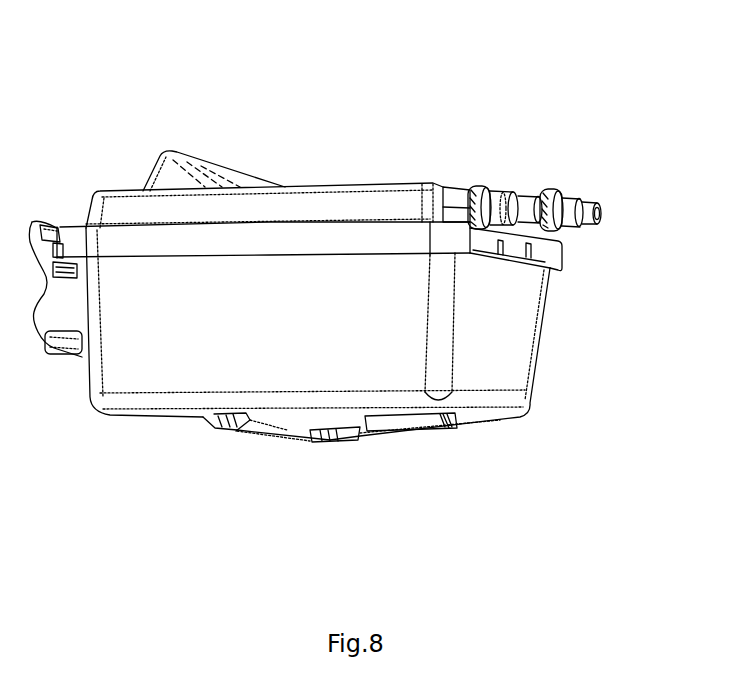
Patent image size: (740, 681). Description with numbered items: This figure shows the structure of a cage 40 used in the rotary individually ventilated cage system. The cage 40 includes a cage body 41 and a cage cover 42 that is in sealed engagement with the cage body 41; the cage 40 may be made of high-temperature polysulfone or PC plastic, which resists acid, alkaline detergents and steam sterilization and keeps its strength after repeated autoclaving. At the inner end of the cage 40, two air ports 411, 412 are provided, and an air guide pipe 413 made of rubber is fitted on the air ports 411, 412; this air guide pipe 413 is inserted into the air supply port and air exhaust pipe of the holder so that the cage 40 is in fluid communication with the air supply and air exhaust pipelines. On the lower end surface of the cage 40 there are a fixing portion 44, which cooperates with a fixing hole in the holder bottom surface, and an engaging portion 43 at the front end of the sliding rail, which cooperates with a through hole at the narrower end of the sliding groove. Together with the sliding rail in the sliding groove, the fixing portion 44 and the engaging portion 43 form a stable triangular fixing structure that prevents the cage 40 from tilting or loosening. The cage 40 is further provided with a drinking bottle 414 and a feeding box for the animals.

The cage 40 is at (353, 45).
The cage body 41 is at (512, 340).
The cage cover 42 is at (353, 205).
The engaging portion 43 is at (408, 420).
The fixing portion 44 is at (217, 420).
The air port 411 is at (457, 200).
The air port 412 is at (547, 193).
The air guide pipe 413 is at (600, 227).
The drinking bottle 414 is at (175, 152).